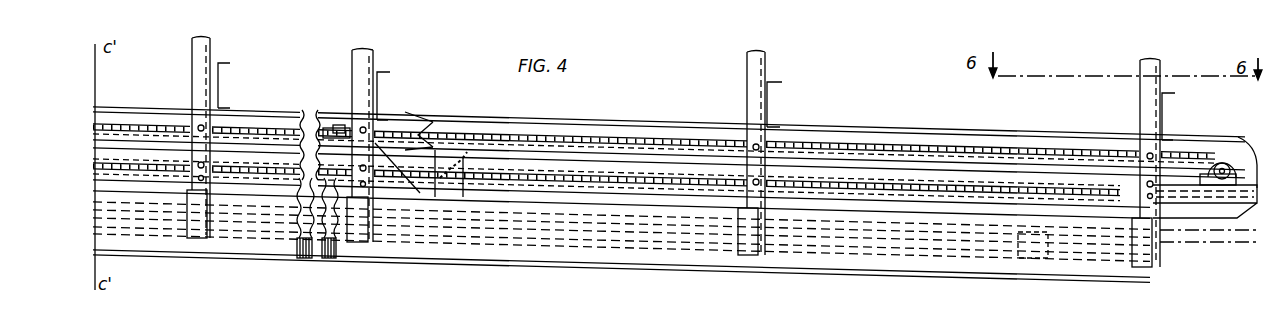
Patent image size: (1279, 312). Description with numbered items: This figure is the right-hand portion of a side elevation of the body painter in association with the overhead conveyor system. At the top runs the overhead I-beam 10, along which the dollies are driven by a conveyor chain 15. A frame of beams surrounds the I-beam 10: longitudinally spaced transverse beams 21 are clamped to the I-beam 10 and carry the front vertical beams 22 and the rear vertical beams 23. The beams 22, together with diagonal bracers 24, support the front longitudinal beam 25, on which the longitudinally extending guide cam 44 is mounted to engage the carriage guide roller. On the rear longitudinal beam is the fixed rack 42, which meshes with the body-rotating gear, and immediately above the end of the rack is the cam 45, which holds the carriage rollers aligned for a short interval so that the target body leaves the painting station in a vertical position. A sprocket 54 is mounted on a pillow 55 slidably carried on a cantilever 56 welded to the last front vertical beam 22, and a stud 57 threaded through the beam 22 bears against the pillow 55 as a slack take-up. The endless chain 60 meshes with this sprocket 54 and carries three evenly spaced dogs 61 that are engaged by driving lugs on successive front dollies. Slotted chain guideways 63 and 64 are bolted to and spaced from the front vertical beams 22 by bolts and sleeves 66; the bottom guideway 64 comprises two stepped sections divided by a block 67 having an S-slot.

The overhead I-beam 10 is at (972, 141).
The conveyor chain 15 is at (1225, 238).
The transverse beam 21 is at (219, 63).
The front vertical beam 22 is at (197, 67).
The rear vertical beam 23 is at (621, 281).
The diagonal bracer 24 is at (197, 240).
The front longitudinal beam 25 is at (897, 269).
The fixed rack 42 is at (326, 260).
The guide cam 44 is at (333, 207).
The cam 45 is at (1040, 258).
The sprocket 54 is at (1212, 165).
The pillow 55 is at (1242, 165).
The cantilever 56 is at (1212, 212).
The stud 57 is at (1184, 181).
The endless chain 60 is at (907, 170).
The dog 61 is at (342, 125).
The chain guideway 63 is at (416, 148).
The bottom chain guideway 64 is at (843, 168).
The sleeve 66 is at (197, 124).
The block 67 is at (465, 190).